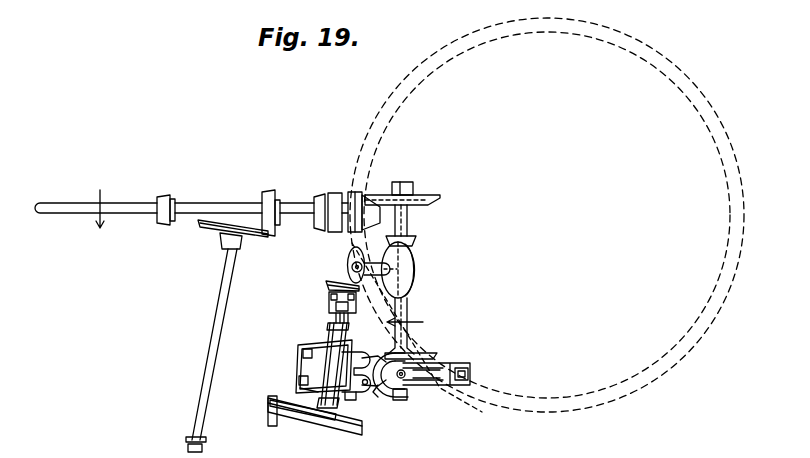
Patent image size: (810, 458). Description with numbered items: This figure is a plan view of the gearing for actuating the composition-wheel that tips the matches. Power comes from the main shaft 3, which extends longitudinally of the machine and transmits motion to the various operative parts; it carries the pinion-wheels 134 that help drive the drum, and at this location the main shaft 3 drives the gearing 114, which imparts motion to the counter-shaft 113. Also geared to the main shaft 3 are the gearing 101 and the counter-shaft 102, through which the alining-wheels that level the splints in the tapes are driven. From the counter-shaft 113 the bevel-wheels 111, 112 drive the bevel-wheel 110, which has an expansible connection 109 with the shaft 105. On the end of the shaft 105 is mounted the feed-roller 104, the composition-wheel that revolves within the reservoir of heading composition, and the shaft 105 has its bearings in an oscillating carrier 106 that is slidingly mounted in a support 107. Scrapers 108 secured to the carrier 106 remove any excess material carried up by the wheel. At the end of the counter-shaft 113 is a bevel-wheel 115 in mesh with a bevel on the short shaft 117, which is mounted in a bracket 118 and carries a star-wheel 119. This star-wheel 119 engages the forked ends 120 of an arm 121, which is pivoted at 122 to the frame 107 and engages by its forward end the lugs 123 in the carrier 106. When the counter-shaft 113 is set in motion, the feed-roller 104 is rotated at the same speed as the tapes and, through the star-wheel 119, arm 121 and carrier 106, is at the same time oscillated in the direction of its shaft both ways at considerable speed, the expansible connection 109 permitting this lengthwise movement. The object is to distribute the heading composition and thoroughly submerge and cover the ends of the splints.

The main shaft 3 is at (74, 203).
The pinion-wheels 134 is at (351, 192).
The gearing 114 is at (432, 203).
The bevel-wheel 112 is at (407, 247).
The bevel-wheel 111 is at (350, 258).
The bevel-wheel 110 is at (338, 283).
The expansible connection 109 is at (330, 298).
The counter-shaft 113 is at (413, 312).
The bevel-wheel 115 is at (432, 362).
The short shaft 117 is at (408, 392).
The bracket 118 is at (418, 384).
The star-wheel 119 is at (407, 392).
The forked ends 120 is at (398, 394).
The support 107 is at (355, 350).
The arm 121 is at (366, 385).
The pivot 122 is at (355, 404).
The shaft 105 is at (289, 348).
The oscillating carrier 106 is at (330, 335).
The lugs 123 is at (305, 388).
The feed-roller 104 is at (340, 425).
The scrapers 108 is at (277, 426).
The counter-shaft 102 is at (213, 341).
The gearing 101 is at (190, 439).